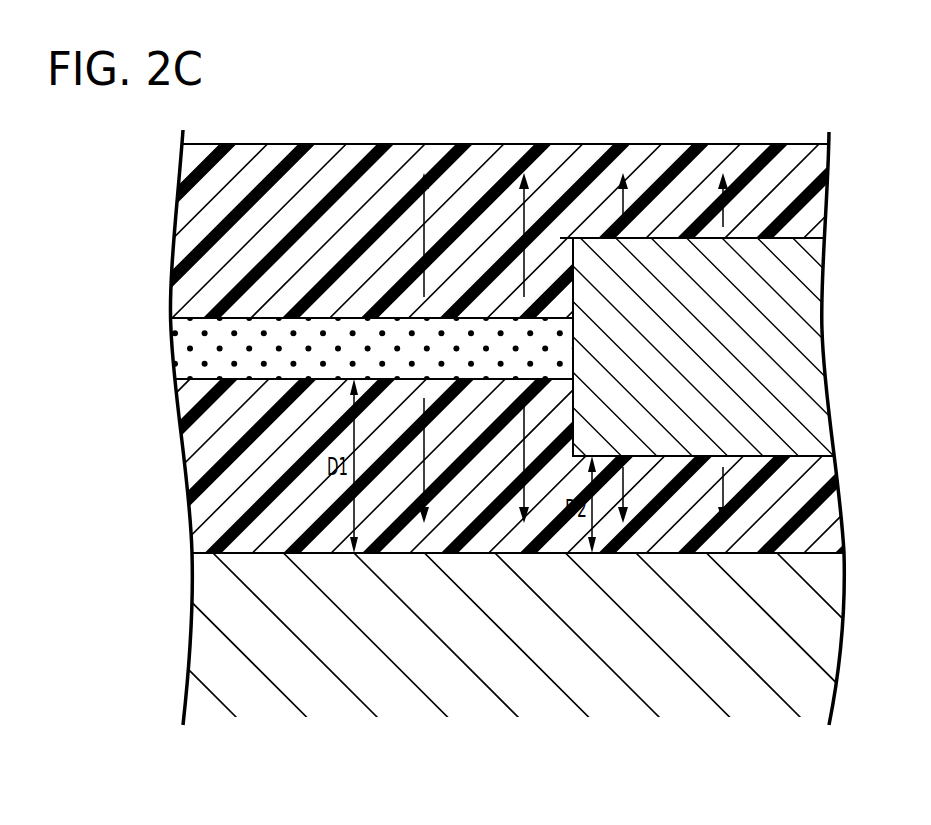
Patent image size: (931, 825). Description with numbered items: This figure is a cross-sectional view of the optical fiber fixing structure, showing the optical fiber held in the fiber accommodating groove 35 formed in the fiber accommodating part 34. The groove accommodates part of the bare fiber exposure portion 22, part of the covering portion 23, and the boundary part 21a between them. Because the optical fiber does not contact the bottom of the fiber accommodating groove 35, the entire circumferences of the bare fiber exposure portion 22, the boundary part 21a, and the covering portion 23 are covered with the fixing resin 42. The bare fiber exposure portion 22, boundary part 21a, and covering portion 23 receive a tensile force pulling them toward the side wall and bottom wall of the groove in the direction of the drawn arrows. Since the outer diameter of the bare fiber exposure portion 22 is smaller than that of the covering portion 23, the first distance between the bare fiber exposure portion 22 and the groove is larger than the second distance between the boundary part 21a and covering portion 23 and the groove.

The fixing resin 42 is at (203, 200).
The bare fiber exposure portion 22 is at (203, 345).
The covering portion 23 is at (757, 348).
The boundary part 21a is at (573, 238).
The fiber accommodating groove 35 is at (245, 552).
The fiber accommodating part 34 is at (203, 644).